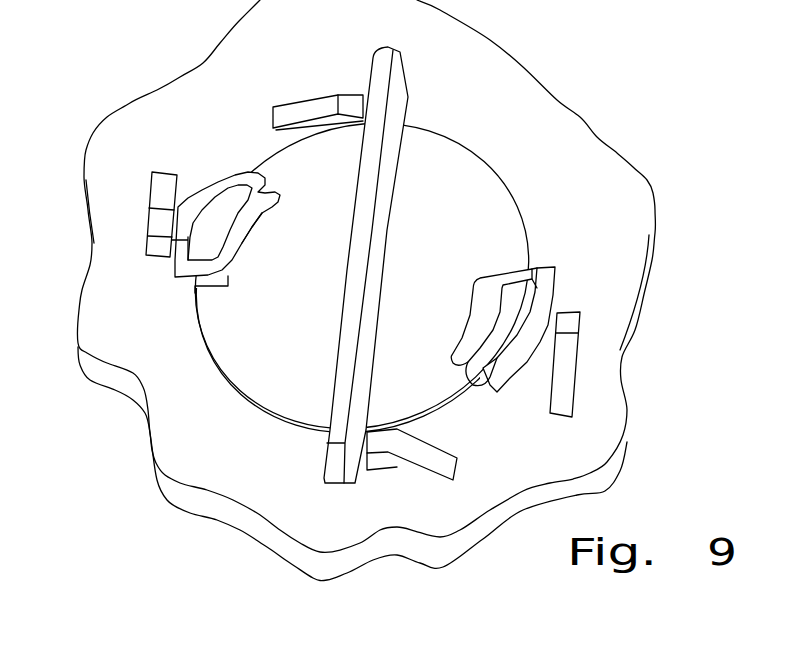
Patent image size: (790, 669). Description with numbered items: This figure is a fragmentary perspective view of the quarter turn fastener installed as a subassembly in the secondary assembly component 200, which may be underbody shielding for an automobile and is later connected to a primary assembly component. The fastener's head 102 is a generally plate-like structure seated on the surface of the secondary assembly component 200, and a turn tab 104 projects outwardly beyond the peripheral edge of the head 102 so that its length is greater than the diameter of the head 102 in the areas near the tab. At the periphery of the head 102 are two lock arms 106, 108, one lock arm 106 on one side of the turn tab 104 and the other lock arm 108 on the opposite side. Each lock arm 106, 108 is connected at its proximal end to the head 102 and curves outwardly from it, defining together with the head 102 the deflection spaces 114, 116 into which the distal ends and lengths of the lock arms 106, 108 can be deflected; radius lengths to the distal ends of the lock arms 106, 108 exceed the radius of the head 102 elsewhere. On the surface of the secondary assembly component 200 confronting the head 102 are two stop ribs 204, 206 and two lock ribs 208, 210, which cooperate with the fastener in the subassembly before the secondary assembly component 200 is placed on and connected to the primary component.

The secondary assembly component 200 is at (527, 100).
The head 102 is at (493, 207).
The turn tab 104 is at (407, 80).
The lock arm 106 is at (238, 170).
The lock arm 108 is at (487, 380).
The deflection space 114 is at (242, 238).
The deflection space 116 is at (477, 287).
The stop rib 204 is at (152, 190).
The stop rib 206 is at (565, 372).
The lock rib 208 is at (311, 104).
The lock rib 210 is at (397, 467).